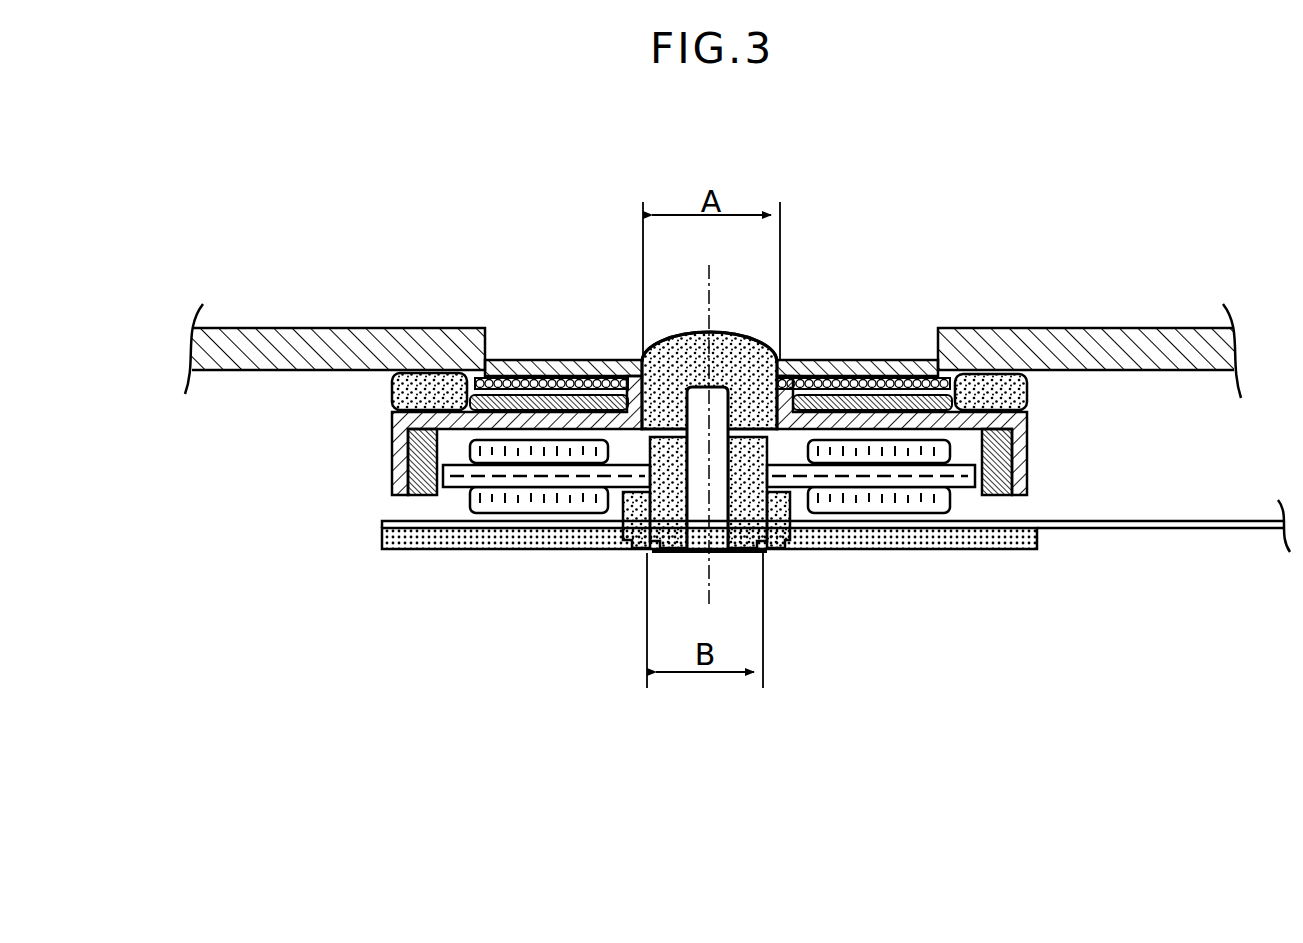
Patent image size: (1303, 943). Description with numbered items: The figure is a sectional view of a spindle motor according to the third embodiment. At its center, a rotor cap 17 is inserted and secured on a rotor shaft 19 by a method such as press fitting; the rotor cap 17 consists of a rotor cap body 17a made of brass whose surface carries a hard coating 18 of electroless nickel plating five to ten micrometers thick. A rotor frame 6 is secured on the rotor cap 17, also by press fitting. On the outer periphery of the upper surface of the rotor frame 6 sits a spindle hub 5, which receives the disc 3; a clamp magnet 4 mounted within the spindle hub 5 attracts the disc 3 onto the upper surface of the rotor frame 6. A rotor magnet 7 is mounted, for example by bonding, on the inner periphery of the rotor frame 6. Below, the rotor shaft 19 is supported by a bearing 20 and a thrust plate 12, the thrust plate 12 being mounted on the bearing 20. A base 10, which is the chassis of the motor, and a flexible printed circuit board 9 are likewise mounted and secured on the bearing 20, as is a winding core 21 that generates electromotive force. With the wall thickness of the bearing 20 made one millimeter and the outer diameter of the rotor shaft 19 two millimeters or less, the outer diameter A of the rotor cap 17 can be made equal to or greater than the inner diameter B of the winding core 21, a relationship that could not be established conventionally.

The disc 3 is at (1083, 345).
The clamp magnet 4 is at (913, 398).
The spindle hub 5 is at (1027, 390).
The rotor frame 6 is at (1030, 447).
The rotor magnet 7 is at (1007, 497).
The flexible printed circuit board 9 is at (1170, 530).
The base 10 is at (986, 540).
The thrust plate 12 is at (765, 500).
The rotor cap 17 is at (733, 330).
The rotor cap body 17a is at (763, 352).
The hard coating 18 is at (753, 342).
The rotor shaft 19 is at (692, 500).
The bearing 20 is at (665, 500).
The winding core 21 is at (872, 488).